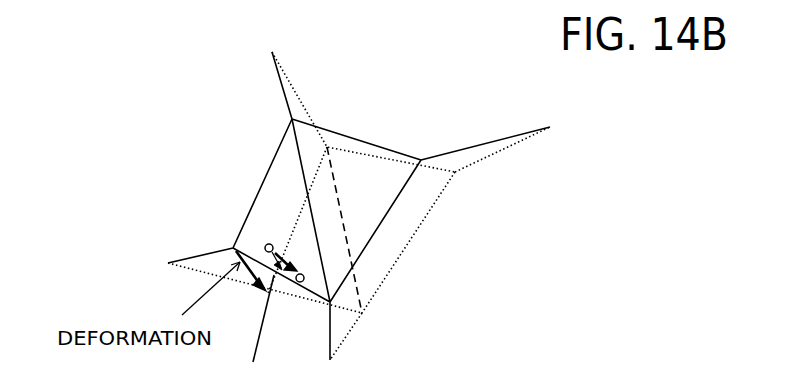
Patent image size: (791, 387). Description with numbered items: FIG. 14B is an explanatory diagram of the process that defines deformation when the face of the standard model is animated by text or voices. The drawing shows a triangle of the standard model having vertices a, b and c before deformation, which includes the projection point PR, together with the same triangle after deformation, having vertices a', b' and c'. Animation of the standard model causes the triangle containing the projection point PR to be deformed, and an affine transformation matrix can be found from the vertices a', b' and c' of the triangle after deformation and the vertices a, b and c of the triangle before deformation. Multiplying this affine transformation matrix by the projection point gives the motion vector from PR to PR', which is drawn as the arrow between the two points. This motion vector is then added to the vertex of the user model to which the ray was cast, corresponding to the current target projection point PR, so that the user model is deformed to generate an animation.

The vertex a is at (346, 106).
The vertex b is at (230, 191).
The vertex c is at (327, 239).
The vertex a' is at (363, 112).
The vertex b' is at (281, 254).
The vertex c' is at (311, 253).
The projection point PR is at (275, 244).
The deformed projection point PR' is at (295, 287).